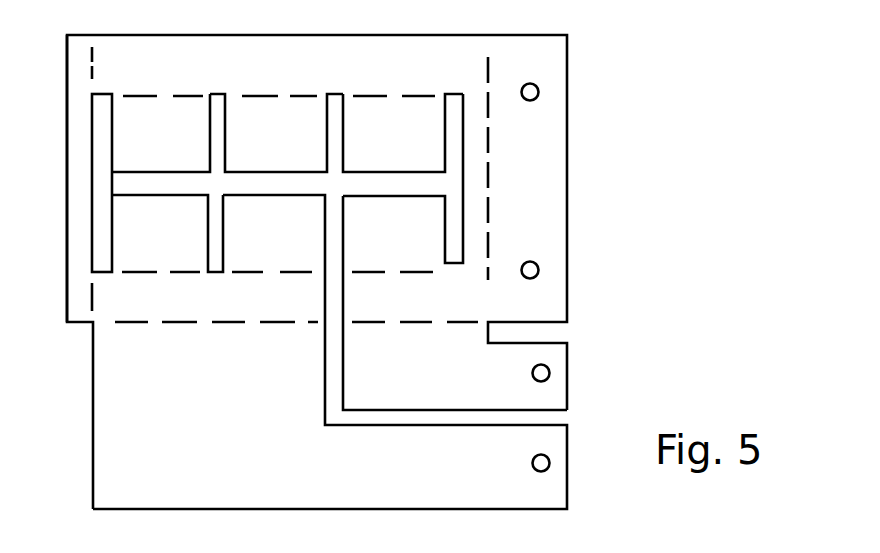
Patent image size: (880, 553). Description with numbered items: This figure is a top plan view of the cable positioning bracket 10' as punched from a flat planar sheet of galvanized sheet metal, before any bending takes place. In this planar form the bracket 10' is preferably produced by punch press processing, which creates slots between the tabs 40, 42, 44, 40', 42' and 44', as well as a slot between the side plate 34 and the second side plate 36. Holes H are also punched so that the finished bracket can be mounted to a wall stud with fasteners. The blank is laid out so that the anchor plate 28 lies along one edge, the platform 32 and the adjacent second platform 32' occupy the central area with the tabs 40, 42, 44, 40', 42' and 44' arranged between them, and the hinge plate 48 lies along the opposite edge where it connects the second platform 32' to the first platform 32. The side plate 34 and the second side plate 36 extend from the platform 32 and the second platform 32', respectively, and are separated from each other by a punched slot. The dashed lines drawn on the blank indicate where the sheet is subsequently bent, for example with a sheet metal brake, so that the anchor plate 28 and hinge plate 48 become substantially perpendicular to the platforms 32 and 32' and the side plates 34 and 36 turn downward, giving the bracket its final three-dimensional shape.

The planar bracket 10' is at (389, 222).
The anchor plate 28 is at (546, 187).
The platform 32 is at (300, 188).
The second platform 32' is at (205, 184).
The side plate 34 is at (430, 388).
The second side plate 36 is at (227, 387).
The tab 40 is at (167, 233).
The tab 40' is at (151, 183).
The tab 42 is at (274, 233).
The tab 42' is at (276, 133).
The tab 44 is at (403, 178).
The tab 44' is at (403, 133).
The hinge plate 48 is at (66, 276).
The holes H is at (538, 96).